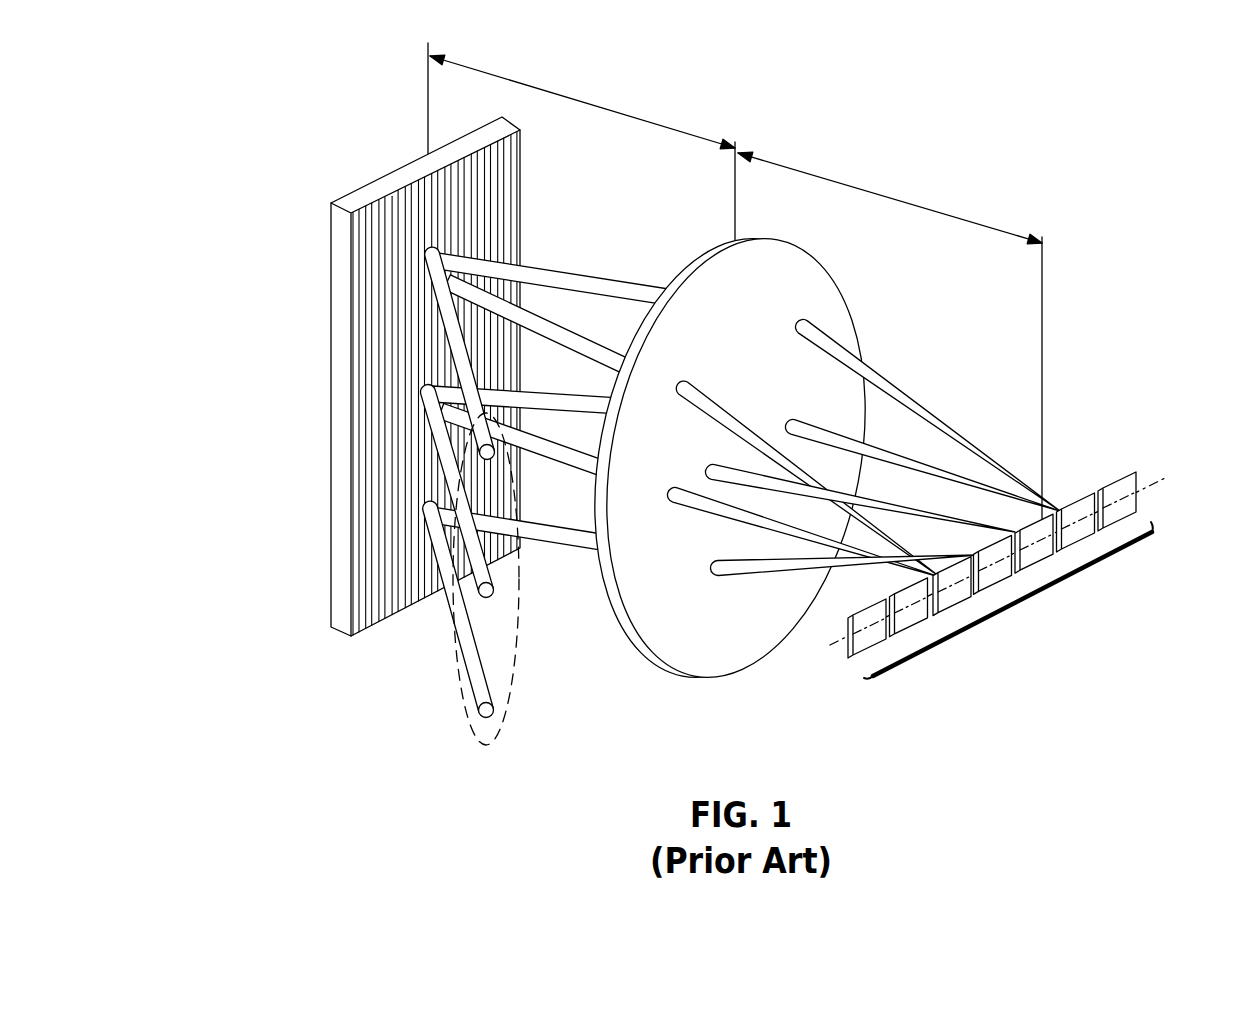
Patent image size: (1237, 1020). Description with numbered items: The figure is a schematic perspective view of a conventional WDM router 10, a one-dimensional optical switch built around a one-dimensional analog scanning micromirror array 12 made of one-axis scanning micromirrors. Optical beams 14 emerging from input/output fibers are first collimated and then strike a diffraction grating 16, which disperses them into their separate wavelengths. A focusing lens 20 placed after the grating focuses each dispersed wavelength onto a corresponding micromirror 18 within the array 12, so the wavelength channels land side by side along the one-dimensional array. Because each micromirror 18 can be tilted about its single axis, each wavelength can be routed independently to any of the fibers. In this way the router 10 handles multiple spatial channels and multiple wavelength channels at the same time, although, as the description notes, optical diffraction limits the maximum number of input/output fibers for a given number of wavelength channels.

The WDM router 10 is at (300, 110).
The one-dimensional analog scanning micromirror array 12 is at (1021, 603).
The optical beams 14 is at (478, 755).
The diffraction grating 16 is at (331, 352).
The micromirror 18 is at (857, 660).
The focusing lens 20 is at (677, 674).